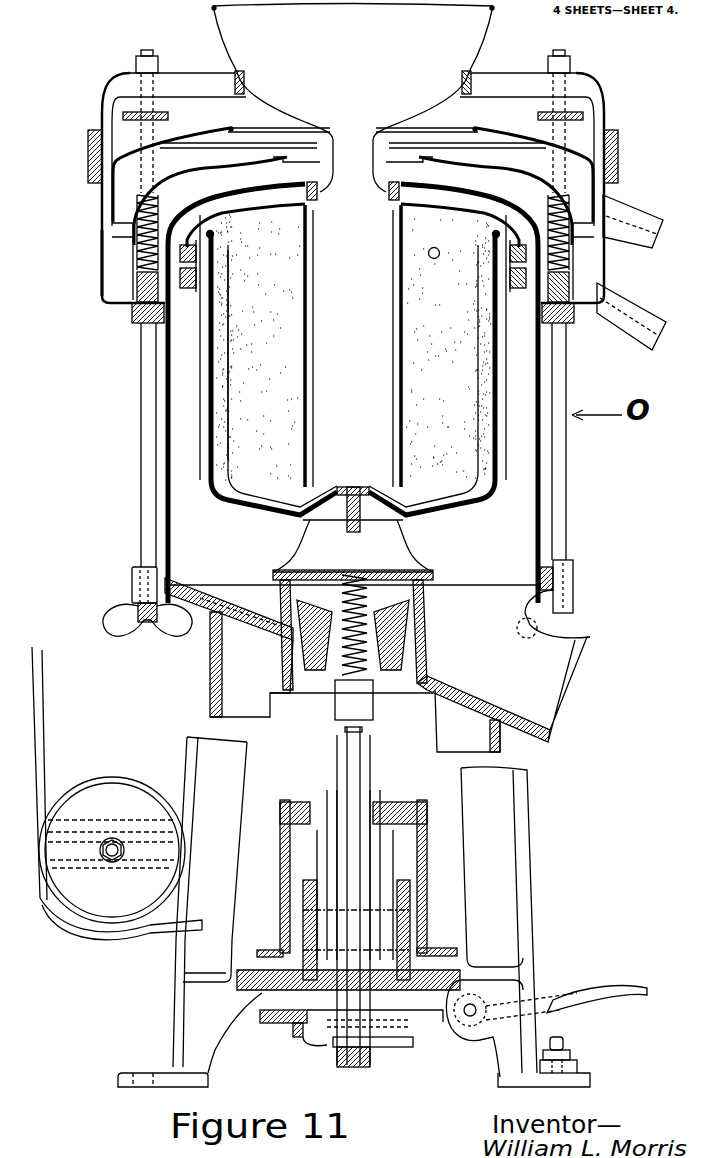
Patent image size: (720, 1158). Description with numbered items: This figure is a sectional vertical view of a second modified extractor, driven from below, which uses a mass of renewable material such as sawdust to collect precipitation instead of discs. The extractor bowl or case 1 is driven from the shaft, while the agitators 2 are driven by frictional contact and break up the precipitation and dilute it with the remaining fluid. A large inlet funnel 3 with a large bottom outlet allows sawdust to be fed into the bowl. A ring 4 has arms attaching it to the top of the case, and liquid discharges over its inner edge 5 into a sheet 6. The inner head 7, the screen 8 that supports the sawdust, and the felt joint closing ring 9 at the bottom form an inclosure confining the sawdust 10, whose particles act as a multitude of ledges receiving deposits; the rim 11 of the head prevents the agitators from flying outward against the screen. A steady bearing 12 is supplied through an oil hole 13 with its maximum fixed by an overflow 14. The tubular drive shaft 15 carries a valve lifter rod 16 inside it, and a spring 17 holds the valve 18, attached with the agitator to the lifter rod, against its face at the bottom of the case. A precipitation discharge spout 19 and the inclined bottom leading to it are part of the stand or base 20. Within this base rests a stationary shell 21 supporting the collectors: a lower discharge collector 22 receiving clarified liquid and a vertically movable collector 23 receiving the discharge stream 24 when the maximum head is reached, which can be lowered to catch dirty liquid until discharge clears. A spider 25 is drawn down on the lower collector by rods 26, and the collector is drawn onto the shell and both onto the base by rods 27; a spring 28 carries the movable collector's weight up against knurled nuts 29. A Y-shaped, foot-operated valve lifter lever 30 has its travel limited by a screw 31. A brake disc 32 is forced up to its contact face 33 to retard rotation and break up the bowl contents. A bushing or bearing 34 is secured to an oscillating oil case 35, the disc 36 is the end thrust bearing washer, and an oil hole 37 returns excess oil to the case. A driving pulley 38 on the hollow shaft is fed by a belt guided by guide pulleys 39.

The extractor bowl 1 is at (235, 520).
The agitators 2 is at (232, 336).
The inlet funnel 3 is at (232, 52).
The ring 4 is at (318, 200).
The inner edge 5 is at (310, 208).
The sheet 6 is at (245, 176).
The inner head 7 is at (272, 222).
The screen 8 is at (214, 405).
The joint closing ring 9 is at (222, 487).
The sawdust 10 is at (422, 402).
The rim 11 is at (470, 244).
The steady bearing 12 is at (428, 610).
The oil hole 13 is at (247, 600).
The overflow 14 is at (285, 645).
The drive shaft 15 is at (372, 755).
The valve lifter rod 16 is at (345, 755).
The spring 17 is at (365, 680).
The valve 18 is at (420, 550).
The precipitation discharge spout 19 is at (553, 690).
The stand or base 20 is at (525, 878).
The stationary shell 21 is at (545, 492).
The lower discharge collector 22 is at (100, 278).
The vertically movable collector 23 is at (108, 150).
The discharge stream 24 is at (244, 142).
The spider 25 is at (168, 84).
The rods 26 is at (168, 116).
The rods 27 is at (140, 462).
The spring 28 is at (130, 310).
The knurled nuts 29 is at (140, 112).
The valve lifter lever 30 is at (565, 998).
The screw 31 is at (566, 1040).
The brake disc 32 is at (260, 1008).
The contact face 33 is at (255, 1003).
The bushing or bearing 34 is at (395, 880).
The oscillating oil case 35 is at (325, 845).
The end thrust bearing washer 36 is at (400, 992).
The oil hole 37 is at (380, 855).
The driving pulley 38 is at (280, 890).
The guide pulleys 39 is at (108, 777).